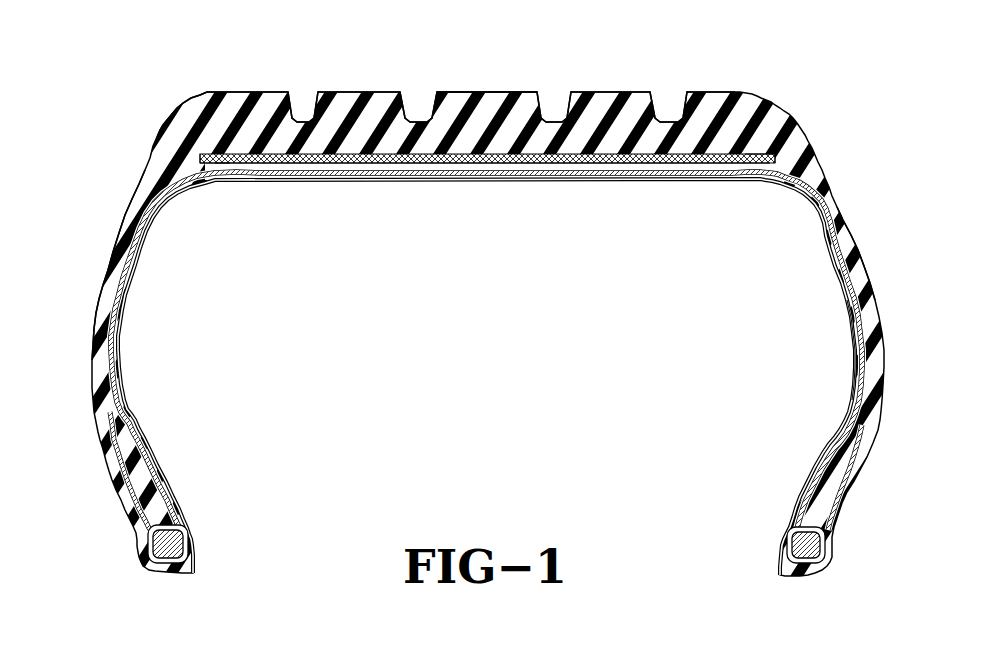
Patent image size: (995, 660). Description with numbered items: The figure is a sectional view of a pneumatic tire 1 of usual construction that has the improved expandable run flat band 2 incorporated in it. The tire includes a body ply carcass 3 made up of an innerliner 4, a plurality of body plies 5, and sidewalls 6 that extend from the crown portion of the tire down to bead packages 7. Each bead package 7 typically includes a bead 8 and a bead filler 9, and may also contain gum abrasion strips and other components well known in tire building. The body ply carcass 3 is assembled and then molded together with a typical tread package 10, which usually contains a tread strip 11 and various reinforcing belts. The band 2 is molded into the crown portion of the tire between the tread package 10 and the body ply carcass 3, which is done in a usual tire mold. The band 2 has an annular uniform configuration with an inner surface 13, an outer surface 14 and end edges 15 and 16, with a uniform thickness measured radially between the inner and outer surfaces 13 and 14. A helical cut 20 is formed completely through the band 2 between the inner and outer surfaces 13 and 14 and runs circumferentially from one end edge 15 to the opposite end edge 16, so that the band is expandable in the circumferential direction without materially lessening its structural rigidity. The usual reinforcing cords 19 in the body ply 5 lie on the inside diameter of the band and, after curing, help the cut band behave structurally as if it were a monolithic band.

The pneumatic tire 1 is at (765, 67).
The expandable run flat band 2 is at (215, 148).
The body ply carcass 3 is at (120, 225).
The innerliner 4 is at (855, 358).
The body plies 5 is at (540, 175).
The sidewalls 6 is at (117, 252).
The bead packages 7 is at (148, 569).
The bead 8 is at (172, 545).
The bead filler 9 is at (162, 508).
The tread package 10 is at (621, 88).
The tread strip 11 is at (503, 92).
The inner surface 13 is at (292, 170).
The outer surface 14 is at (255, 153).
The end edge 15 is at (778, 158).
The end edge 16 is at (200, 160).
The reinforcing cords 19 is at (433, 173).
The helical cut 20 is at (592, 171).